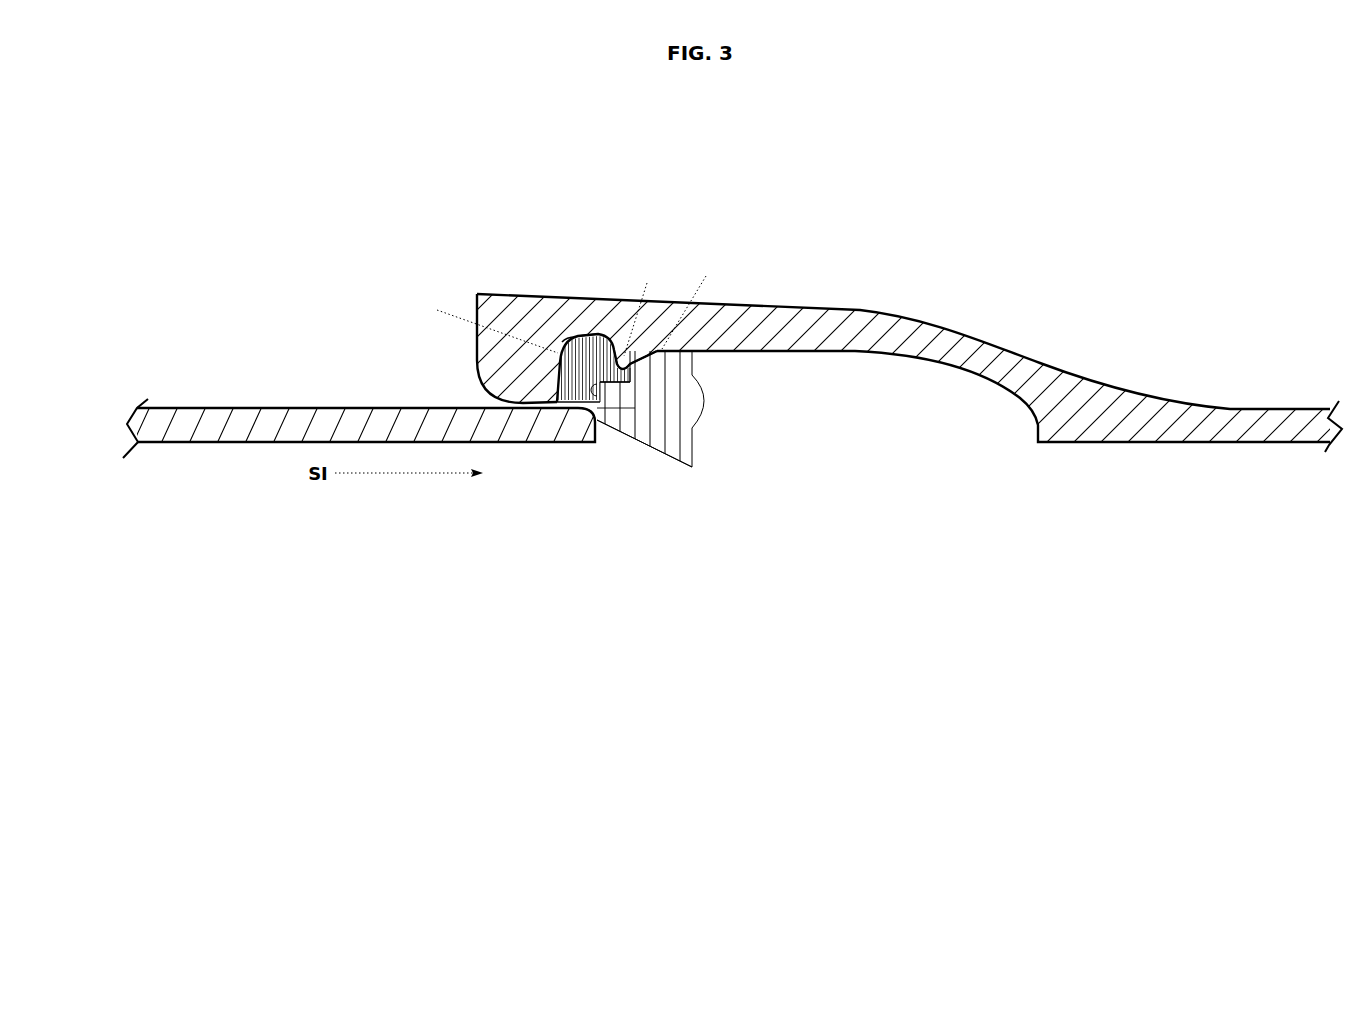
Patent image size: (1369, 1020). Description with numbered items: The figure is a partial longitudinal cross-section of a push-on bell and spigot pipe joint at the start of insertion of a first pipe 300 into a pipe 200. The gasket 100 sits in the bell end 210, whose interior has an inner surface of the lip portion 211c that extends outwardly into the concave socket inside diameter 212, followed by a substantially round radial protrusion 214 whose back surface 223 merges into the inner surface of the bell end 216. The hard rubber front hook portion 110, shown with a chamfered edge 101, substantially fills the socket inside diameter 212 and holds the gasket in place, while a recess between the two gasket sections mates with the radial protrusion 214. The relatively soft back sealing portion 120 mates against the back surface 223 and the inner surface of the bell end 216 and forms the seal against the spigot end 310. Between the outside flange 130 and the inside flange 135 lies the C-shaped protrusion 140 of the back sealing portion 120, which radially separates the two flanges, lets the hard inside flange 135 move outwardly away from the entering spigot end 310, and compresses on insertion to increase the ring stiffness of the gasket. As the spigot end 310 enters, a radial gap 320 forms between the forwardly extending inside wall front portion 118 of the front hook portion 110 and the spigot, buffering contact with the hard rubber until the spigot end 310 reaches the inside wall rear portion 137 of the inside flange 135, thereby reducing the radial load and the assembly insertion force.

The gasket 100 is at (660, 472).
The chamfered edge 101 is at (568, 340).
The front hook portion 110 is at (582, 358).
The inside wall front portion 118 is at (566, 400).
The back sealing portion 120 is at (668, 400).
The outside flange 130 is at (620, 363).
The inside flange 135 is at (599, 398).
The inside wall rear portion 137 is at (593, 420).
The C-shaped protrusion 140 is at (602, 393).
The pipe 200 is at (808, 308).
The bell end 210 is at (477, 292).
The inner surface of the lip portion 211c is at (473, 322).
The socket inside diameter 212 is at (583, 333).
The radial protrusion 214 is at (637, 307).
The inner surface of the bell end 216 is at (695, 298).
The back surface of the radial protrusion 223 is at (625, 365).
The first pipe 300 is at (362, 420).
The spigot end 310 is at (355, 409).
The radial gap 320 is at (580, 413).